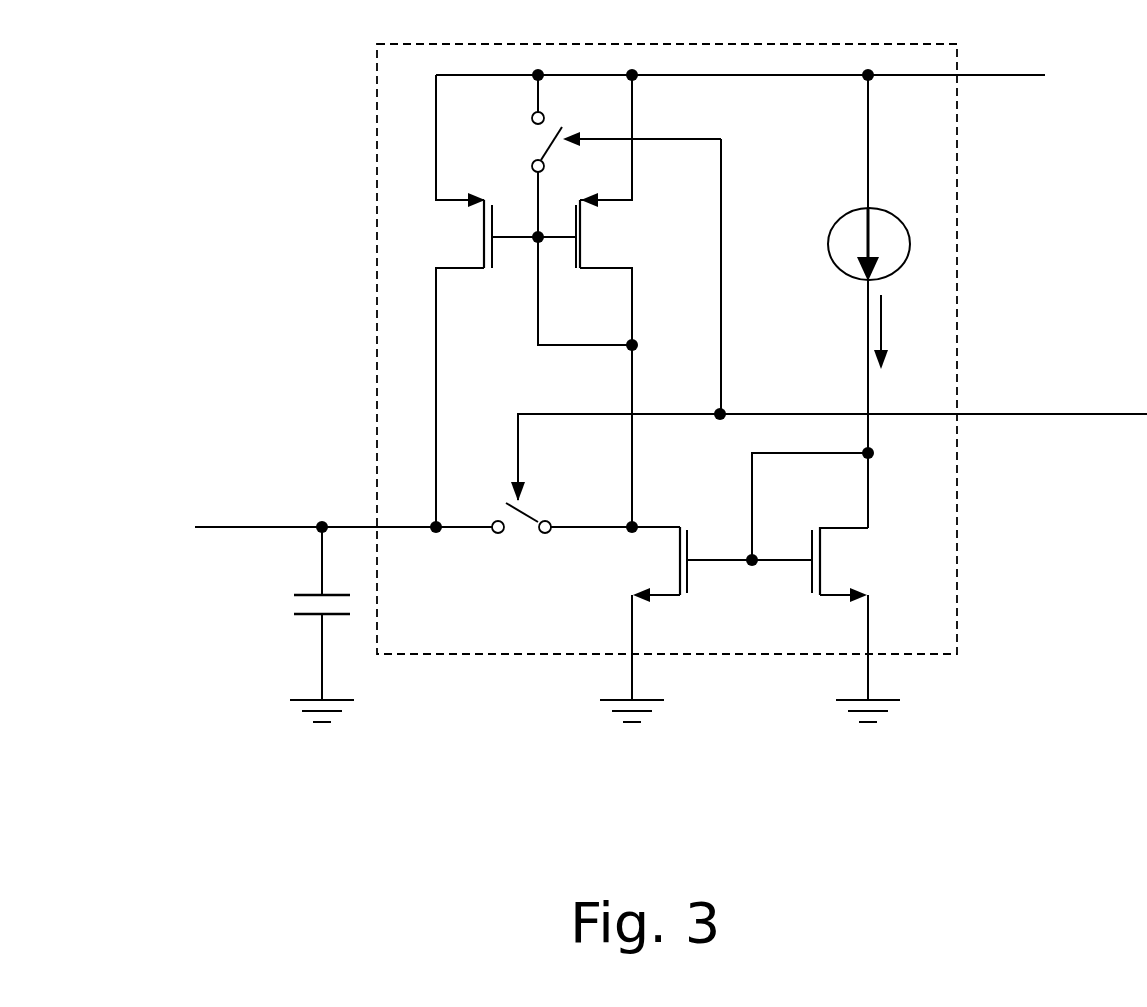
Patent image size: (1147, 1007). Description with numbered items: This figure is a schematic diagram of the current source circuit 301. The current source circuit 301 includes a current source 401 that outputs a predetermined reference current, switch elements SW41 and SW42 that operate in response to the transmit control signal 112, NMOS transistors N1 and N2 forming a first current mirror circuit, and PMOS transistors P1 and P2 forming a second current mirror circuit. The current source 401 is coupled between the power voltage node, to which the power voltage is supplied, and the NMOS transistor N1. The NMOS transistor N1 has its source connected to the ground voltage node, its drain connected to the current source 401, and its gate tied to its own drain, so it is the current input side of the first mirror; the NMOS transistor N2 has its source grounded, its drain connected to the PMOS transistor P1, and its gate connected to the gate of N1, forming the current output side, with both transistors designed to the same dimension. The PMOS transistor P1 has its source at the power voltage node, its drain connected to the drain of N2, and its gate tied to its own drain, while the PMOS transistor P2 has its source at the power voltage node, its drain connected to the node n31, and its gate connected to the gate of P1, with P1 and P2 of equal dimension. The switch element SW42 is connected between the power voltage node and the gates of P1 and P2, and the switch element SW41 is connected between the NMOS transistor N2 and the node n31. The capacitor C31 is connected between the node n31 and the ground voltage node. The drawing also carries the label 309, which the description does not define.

The circuit 309 is at (240, 264).
The current source circuit 301 is at (957, 540).
The current source 401 is at (913, 226).
The transmit control signal 112 is at (1010, 414).
The capacitor C31 is at (278, 607).
The node n31 is at (437, 512).
The switch element SW41 is at (526, 527).
The switch element SW42 is at (589, 210).
The PMOS transistor P1 is at (616, 301).
The PMOS transistor P2 is at (490, 301).
The NMOS transistor N1 is at (856, 643).
The NMOS transistor N2 is at (734, 606).